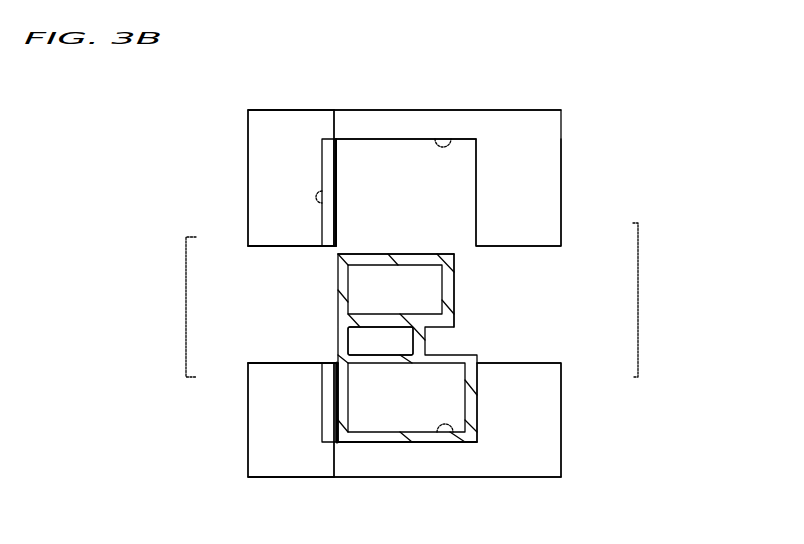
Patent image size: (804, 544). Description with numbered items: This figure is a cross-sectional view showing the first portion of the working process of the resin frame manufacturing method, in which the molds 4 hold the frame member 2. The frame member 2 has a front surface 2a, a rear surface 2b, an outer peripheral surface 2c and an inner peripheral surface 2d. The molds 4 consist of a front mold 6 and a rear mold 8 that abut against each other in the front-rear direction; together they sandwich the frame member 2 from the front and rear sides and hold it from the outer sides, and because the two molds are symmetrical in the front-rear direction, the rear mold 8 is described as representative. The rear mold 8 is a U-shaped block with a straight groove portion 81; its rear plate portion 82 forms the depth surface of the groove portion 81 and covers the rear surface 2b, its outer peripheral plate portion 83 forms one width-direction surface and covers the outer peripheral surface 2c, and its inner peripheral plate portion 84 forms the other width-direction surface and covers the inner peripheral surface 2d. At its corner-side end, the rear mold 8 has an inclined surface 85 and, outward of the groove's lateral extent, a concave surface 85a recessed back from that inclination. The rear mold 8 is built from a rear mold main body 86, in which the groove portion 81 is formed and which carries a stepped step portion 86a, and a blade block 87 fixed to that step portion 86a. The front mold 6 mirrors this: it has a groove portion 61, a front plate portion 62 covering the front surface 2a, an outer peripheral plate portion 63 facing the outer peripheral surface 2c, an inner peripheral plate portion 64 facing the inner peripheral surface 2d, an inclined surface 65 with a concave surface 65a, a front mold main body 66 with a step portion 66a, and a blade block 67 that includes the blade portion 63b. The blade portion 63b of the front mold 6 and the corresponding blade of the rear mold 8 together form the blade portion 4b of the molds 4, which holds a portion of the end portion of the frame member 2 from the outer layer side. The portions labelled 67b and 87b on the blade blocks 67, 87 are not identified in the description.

The frame member 2 is at (455, 285).
The front surface 2a is at (403, 253).
The rear surface 2b is at (423, 442).
The outer peripheral surface 2c is at (338, 322).
The inner peripheral surface 2d is at (455, 302).
The molds 4 is at (640, 287).
The blade portion 4b is at (186, 298).
The front mold 6 is at (563, 223).
The rear mold 8 is at (563, 377).
The groove portion 61 is at (453, 139).
The front plate portion 62 is at (391, 110).
The outer peripheral plate portion 63 is at (248, 208).
The blade portion 63b is at (338, 167).
The inner peripheral plate portion 64 is at (563, 194).
The inclined surface 65 is at (355, 125).
The concave surface 65a is at (277, 123).
The front mold main body 66 is at (290, 157).
The step portion 66a is at (322, 205).
The blade block 67 is at (336, 181).
The lower edge of upper case member 67b is at (338, 237).
The groove portion 81 is at (453, 432).
The rear plate portion 82 is at (395, 477).
The outer peripheral plate portion 83 is at (248, 457).
The inner peripheral plate portion 84 is at (563, 415).
The inclined surface 85 is at (355, 452).
The concave surface 85a is at (277, 460).
The rear mold main body 86 is at (293, 424).
The step portion 86a is at (330, 362).
The blade block 87 is at (322, 403).
The upper edge of lower case member 87b is at (338, 377).